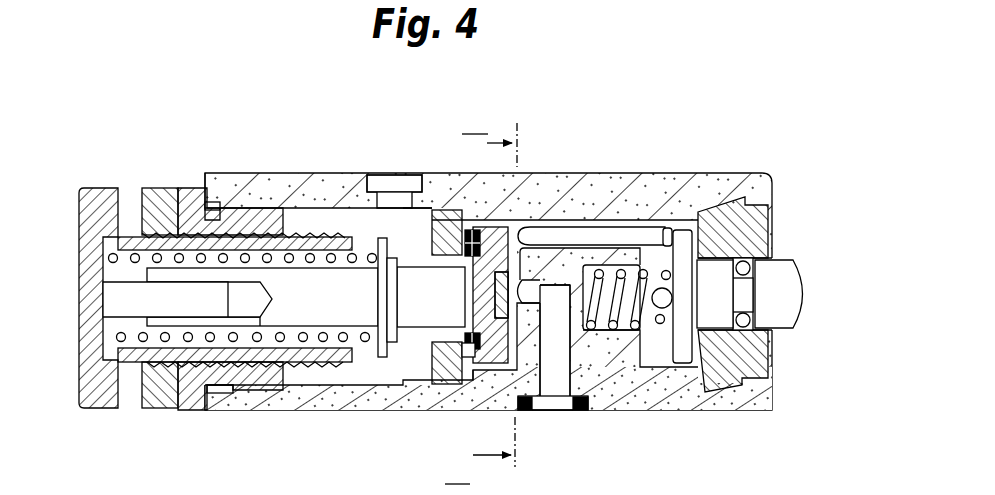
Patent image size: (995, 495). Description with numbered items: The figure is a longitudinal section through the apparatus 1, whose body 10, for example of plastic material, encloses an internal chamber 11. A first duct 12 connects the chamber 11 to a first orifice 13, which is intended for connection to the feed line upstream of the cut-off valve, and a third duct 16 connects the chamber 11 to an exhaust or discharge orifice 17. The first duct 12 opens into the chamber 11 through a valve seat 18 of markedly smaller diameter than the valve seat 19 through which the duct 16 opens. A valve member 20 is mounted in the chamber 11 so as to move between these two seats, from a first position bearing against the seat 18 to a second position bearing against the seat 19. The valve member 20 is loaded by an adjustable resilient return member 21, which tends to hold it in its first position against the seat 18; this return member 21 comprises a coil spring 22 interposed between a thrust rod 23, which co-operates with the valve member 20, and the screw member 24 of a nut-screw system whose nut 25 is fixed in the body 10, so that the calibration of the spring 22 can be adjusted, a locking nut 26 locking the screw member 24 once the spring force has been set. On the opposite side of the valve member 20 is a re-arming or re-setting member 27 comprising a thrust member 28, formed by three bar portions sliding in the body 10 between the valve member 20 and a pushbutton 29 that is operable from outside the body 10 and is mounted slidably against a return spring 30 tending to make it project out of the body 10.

The apparatus 1 is at (439, 277).
The body 10 is at (491, 257).
The internal chamber 11 is at (435, 415).
The first duct 12 is at (557, 358).
The first orifice 13 is at (557, 410).
The third duct 16 is at (436, 262).
The exhaust or discharge orifice 17 is at (383, 238).
The valve seat 18 is at (518, 234).
The valve seat 19 is at (431, 228).
The valve member 20 is at (459, 245).
The resilient return member 21 is at (69, 315).
The coil spring 22 is at (272, 208).
The thrust rod 23 is at (300, 282).
The screw member 24 is at (93, 210).
The nut 25 is at (193, 205).
The locking nut 26 is at (155, 200).
The re-arming or re-setting member 27 is at (774, 250).
The thrust member 28 is at (595, 175).
The pushbutton 29 is at (783, 302).
The return spring 30 is at (653, 212).